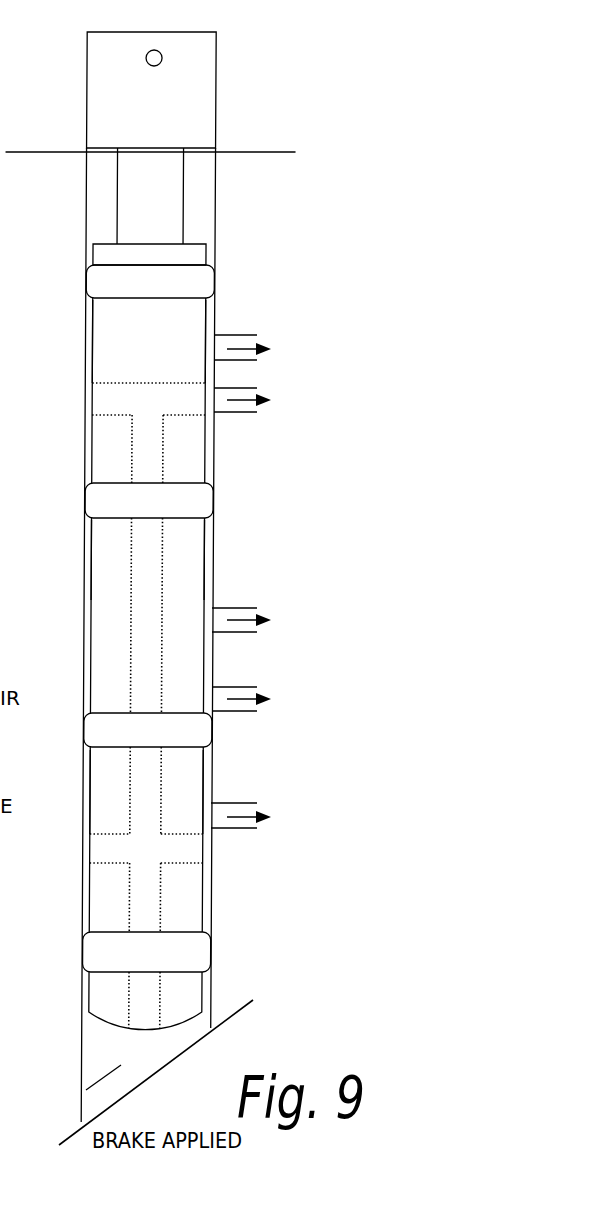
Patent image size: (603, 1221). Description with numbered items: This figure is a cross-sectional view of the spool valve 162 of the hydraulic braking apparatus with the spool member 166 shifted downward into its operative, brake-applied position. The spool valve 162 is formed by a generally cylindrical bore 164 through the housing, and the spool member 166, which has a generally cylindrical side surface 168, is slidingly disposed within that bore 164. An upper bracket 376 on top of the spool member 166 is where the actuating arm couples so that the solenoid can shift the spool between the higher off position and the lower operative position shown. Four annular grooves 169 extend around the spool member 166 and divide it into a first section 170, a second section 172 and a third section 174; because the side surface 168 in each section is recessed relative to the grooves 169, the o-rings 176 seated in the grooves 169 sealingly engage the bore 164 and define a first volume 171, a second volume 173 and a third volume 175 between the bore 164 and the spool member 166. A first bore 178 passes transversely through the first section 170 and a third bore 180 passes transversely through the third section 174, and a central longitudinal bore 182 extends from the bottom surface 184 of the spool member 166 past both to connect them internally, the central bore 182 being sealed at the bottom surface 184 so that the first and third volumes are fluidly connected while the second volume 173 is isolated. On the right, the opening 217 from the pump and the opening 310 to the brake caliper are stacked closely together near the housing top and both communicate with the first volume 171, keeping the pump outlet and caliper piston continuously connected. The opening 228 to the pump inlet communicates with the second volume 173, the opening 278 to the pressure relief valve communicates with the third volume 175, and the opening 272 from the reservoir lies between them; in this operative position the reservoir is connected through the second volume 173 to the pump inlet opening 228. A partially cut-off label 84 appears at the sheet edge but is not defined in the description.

The brake lever 84 is at (60, 1105).
The spool valve 162 is at (238, 63).
The spool bore 164 is at (214, 189).
The spool member 166 is at (79, 26).
The cylindrical side surface 168 is at (206, 250).
The annular grooves 169 is at (89, 297).
The first section 170 is at (108, 339).
The first volume 171 is at (88, 383).
The second section 172 is at (90, 584).
The second volume 173 is at (88, 625).
The third section 174 is at (85, 808).
The third volume 175 is at (86, 862).
The o-rings 176 is at (100, 270).
The first bore 178 is at (158, 392).
The third bore 180 is at (185, 850).
The central longitudinal bore 182 is at (145, 993).
The bottom surface 184 is at (184, 1030).
The pump outlet-spool passageway opening 217 is at (215, 335).
The pump inlet-spool passageway opening 228 is at (213, 608).
The reservoir-spool passageway opening 272 is at (213, 687).
The pressure valve passageway opening 278 is at (212, 803).
The caliper-spool passageway opening 310 is at (214, 412).
The upper bracket 376 is at (193, 101).